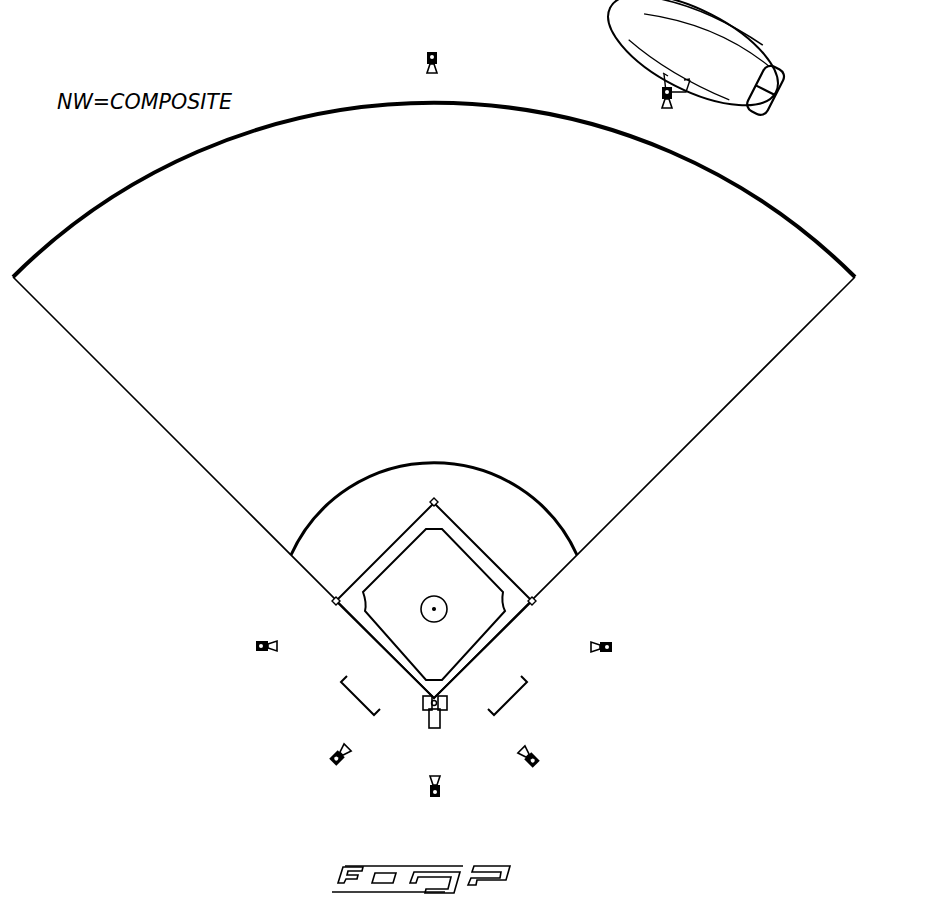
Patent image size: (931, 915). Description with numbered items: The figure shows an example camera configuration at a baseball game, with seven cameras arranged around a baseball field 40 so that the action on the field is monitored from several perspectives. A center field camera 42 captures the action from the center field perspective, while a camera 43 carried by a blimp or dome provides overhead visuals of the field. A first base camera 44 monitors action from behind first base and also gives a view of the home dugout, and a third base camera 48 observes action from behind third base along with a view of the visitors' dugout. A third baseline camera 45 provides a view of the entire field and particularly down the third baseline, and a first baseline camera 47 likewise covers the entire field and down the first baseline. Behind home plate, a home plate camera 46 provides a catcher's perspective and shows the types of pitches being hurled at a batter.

The baseball field 40 is at (653, 483).
The center field camera 42 is at (438, 60).
The camera 43 is at (662, 93).
The first base camera 44 is at (607, 640).
The third baseline camera 45 is at (537, 753).
The home plate camera 46 is at (445, 785).
The first baseline camera 47 is at (332, 753).
The third base camera 48 is at (257, 642).